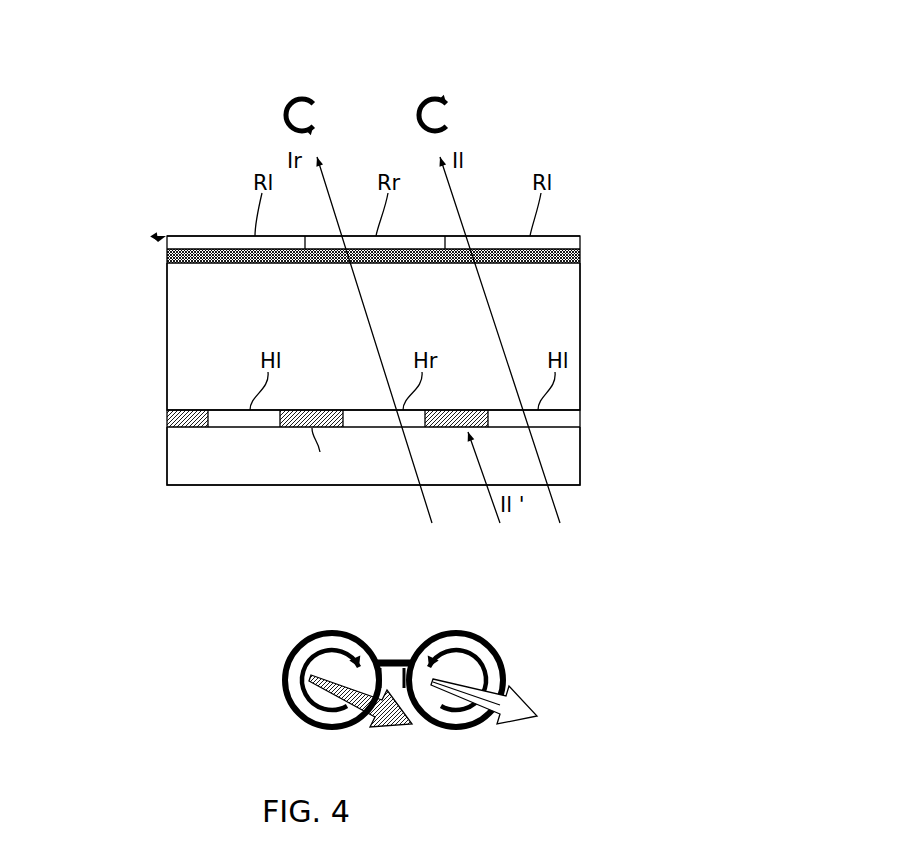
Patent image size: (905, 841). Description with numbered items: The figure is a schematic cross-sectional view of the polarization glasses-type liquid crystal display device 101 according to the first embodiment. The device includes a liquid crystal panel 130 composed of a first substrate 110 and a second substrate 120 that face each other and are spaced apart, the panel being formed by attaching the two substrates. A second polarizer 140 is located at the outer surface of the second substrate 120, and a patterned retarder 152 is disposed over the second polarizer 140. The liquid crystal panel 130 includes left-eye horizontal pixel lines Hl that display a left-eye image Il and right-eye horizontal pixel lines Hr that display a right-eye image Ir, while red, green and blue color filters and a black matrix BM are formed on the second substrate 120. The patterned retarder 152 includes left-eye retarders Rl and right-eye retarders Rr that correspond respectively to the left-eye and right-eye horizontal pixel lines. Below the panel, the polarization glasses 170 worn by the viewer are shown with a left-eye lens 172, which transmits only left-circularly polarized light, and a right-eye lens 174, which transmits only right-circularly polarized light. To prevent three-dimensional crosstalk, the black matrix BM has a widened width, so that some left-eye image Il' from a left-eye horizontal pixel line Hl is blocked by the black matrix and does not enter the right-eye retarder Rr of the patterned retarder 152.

The polarization glasses-type liquid crystal display device 101 is at (497, 50).
The first substrate 110 is at (192, 450).
The second substrate 120 is at (192, 371).
The liquid crystal panel 130 is at (302, 374).
The second polarizer 140 is at (167, 254).
The patterned retarder 152 is at (156, 238).
The polarization glasses 170 is at (421, 651).
The left-eye lens 172 is at (355, 630).
The right-eye lens 174 is at (425, 630).